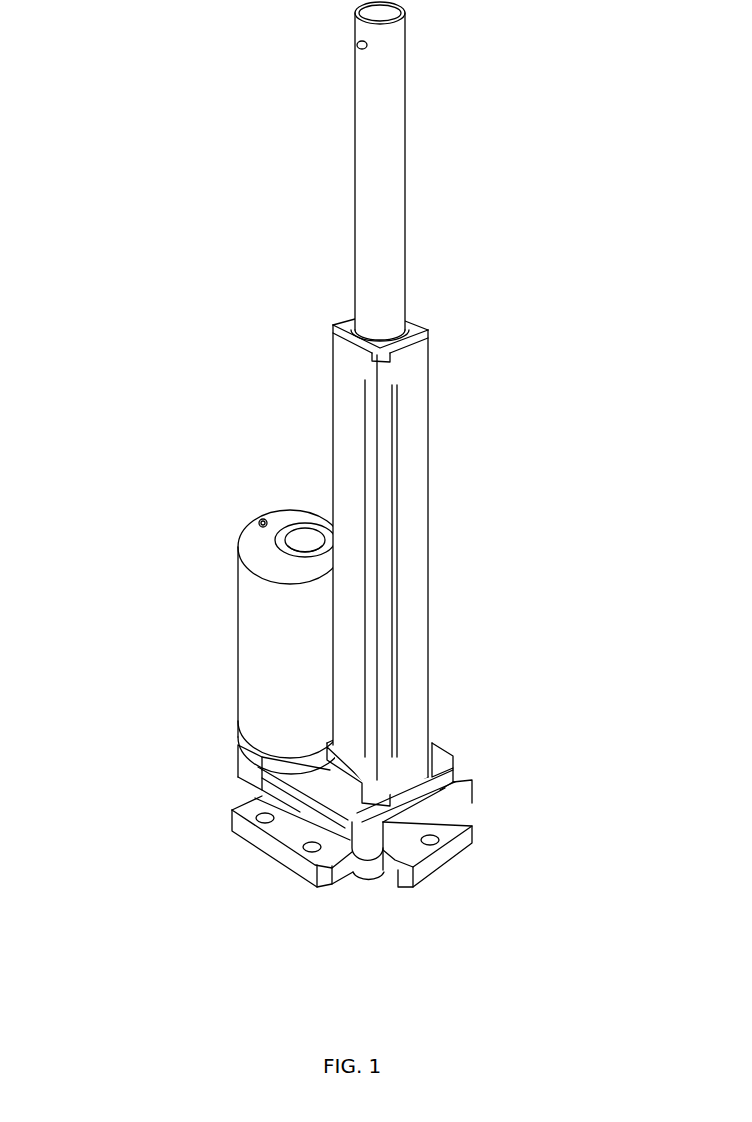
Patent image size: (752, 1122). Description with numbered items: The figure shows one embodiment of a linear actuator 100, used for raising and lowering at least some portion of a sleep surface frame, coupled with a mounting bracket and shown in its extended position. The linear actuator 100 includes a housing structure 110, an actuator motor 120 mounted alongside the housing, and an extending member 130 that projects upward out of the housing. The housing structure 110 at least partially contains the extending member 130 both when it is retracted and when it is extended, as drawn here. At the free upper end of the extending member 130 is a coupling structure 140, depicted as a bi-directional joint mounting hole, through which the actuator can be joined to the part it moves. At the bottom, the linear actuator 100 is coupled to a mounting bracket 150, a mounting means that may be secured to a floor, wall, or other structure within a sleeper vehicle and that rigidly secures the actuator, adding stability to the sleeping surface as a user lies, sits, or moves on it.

The linear actuator 100 is at (207, 343).
The housing structure 110 is at (428, 575).
The actuator motor 120 is at (238, 630).
The extending member 130 is at (405, 183).
The coupling structure 140 is at (356, 48).
The mounting bracket 150 is at (468, 826).